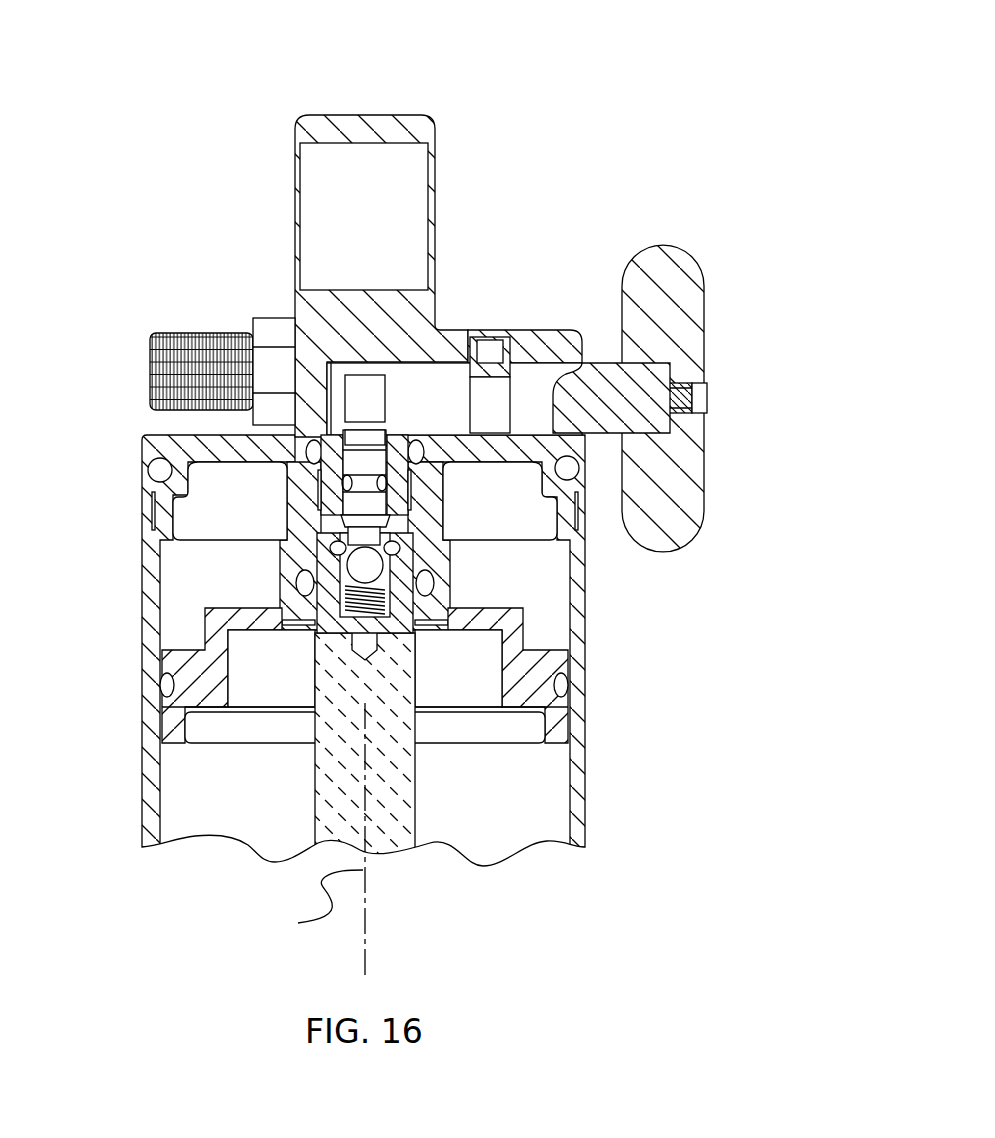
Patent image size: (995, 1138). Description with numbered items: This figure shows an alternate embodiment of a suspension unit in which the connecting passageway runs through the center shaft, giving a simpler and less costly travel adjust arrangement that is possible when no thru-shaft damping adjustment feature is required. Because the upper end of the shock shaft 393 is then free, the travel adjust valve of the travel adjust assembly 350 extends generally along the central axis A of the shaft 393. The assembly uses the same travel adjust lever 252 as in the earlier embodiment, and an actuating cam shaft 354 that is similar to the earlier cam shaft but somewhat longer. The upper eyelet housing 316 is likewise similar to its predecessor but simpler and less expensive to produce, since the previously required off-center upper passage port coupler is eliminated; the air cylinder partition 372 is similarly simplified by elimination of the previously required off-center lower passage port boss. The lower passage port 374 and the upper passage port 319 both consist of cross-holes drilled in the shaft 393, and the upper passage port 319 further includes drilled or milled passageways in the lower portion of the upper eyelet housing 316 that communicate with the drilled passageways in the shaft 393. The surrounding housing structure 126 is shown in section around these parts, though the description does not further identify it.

The travel adjust assembly 350 is at (434, 494).
The actuating cam shaft 354 is at (533, 385).
The travel adjust lever 252 is at (655, 303).
The upper eyelet housing 316 is at (340, 320).
The upper passage port 319 is at (330, 528).
The air cylinder partition 372 is at (532, 670).
The lower passage port 374 is at (330, 637).
The housing 126 is at (577, 828).
The shaft 393 is at (403, 850).